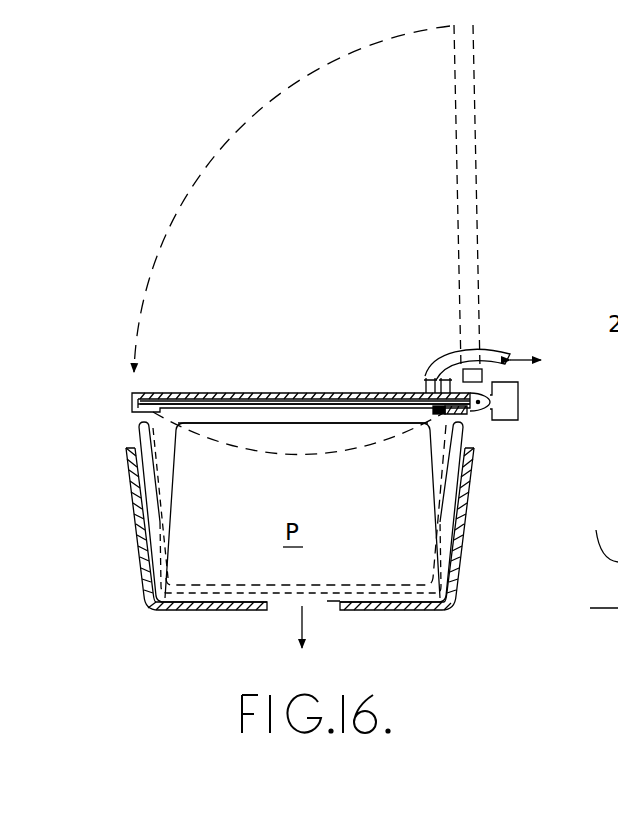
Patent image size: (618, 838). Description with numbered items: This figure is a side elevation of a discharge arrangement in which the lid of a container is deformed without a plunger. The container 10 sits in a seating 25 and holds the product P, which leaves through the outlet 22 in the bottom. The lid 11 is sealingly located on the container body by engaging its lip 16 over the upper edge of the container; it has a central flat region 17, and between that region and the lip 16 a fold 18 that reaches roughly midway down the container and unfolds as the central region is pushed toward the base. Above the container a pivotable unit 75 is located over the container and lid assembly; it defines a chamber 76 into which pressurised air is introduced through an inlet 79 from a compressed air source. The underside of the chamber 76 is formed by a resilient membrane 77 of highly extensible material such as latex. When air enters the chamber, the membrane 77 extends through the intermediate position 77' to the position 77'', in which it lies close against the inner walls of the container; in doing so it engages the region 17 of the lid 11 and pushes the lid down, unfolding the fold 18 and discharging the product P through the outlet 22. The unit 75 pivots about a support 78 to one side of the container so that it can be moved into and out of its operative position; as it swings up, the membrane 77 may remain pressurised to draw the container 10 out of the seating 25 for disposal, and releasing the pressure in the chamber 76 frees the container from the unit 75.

The container 10 is at (393, 611).
The lid 11 is at (352, 421).
The lip 16 is at (137, 427).
The central flat region 17 is at (222, 428).
The fold 18 is at (179, 490).
The opening 22 is at (322, 604).
The seating 25 is at (137, 523).
The pivotable unit 75 is at (455, 215).
The chamber 76 is at (323, 398).
The resilient membrane 77 is at (304, 357).
The intermediate membrane position 77' is at (299, 456).
The extended membrane position 77'' is at (306, 505).
The support 78 is at (478, 413).
The inlet 79 is at (449, 361).